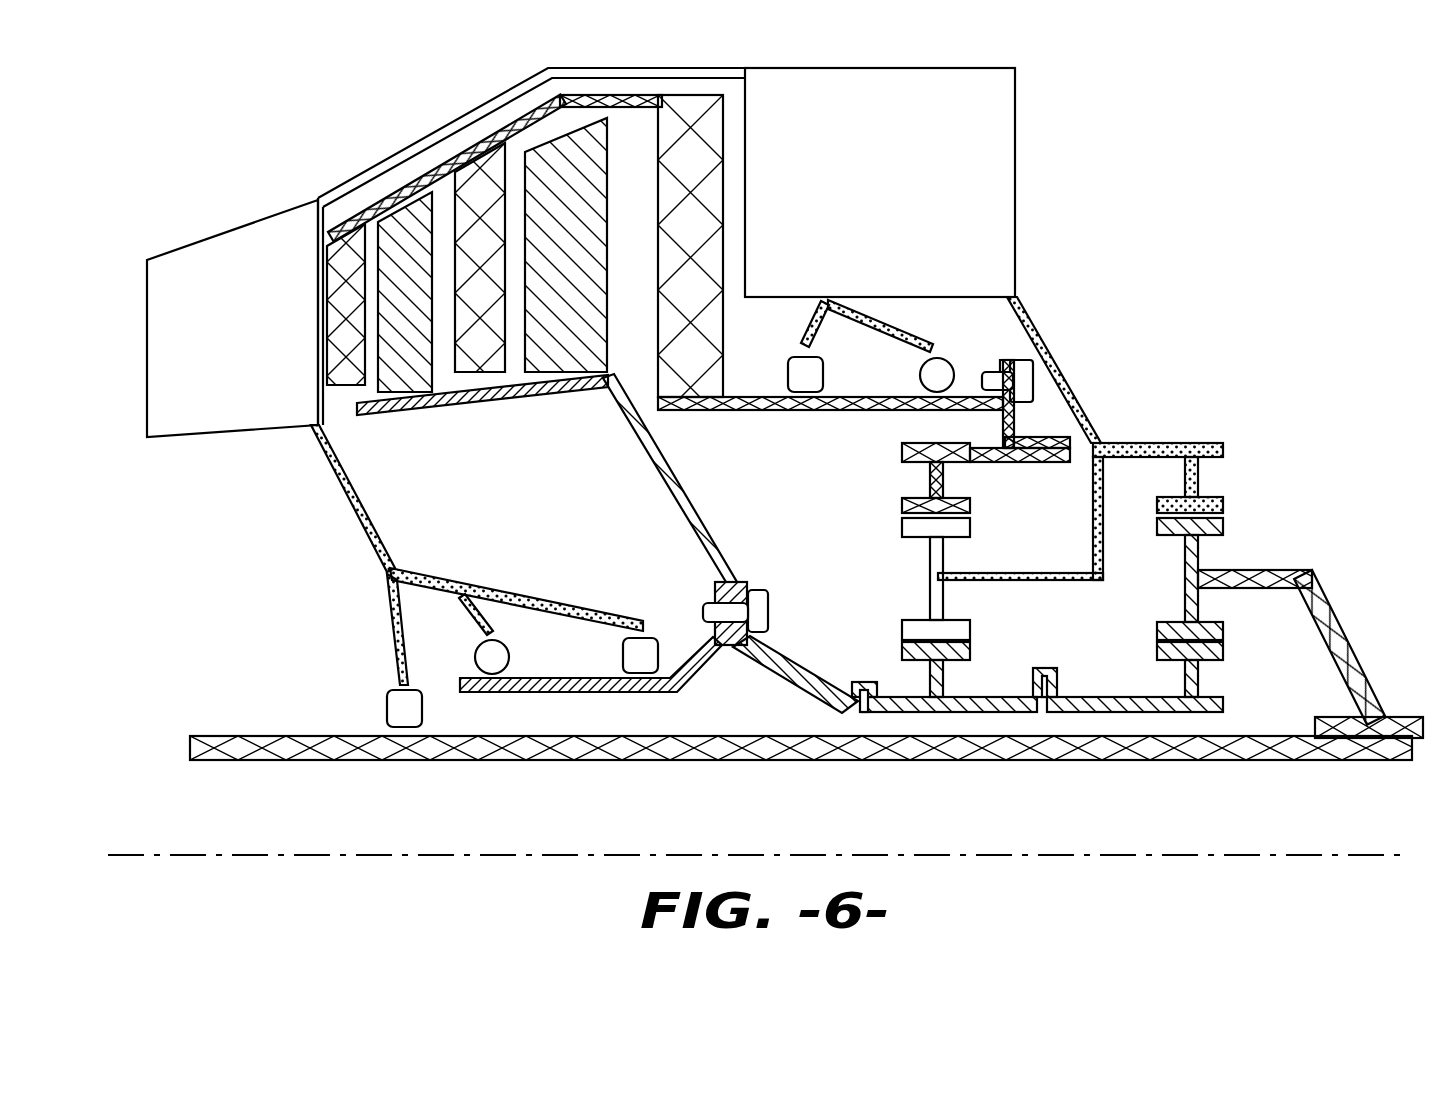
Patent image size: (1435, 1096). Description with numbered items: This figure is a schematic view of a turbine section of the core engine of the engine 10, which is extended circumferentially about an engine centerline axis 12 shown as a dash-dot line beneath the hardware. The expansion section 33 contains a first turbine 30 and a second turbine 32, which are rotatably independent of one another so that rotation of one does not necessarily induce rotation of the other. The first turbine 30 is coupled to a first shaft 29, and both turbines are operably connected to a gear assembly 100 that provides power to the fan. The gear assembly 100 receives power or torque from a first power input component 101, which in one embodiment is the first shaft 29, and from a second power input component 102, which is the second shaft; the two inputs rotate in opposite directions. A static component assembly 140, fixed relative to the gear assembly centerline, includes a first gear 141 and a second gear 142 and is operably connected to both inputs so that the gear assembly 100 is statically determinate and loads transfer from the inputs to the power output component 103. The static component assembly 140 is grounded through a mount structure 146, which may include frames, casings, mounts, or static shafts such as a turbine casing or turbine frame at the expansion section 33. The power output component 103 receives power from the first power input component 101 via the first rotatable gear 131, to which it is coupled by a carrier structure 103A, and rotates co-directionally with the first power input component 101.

The engine 10 is at (1172, 109).
The engine centerline axis 12 is at (440, 862).
The first shaft 29 is at (780, 663).
The first turbine 30 is at (505, 403).
The second turbine 32 is at (628, 95).
The expansion section 33 is at (426, 98).
The gear assembly 100 is at (1151, 410).
The first power input component 101 is at (945, 670).
The second power input component 102 is at (930, 478).
The power output component 103 is at (1360, 657).
The carrier structure 103A is at (1258, 570).
The first rotatable gear 131 is at (1198, 600).
The static component assembly 140 is at (1023, 583).
The first gear 141 is at (1205, 462).
The second gear 142 is at (930, 587).
The mount structure 146 is at (146, 308).